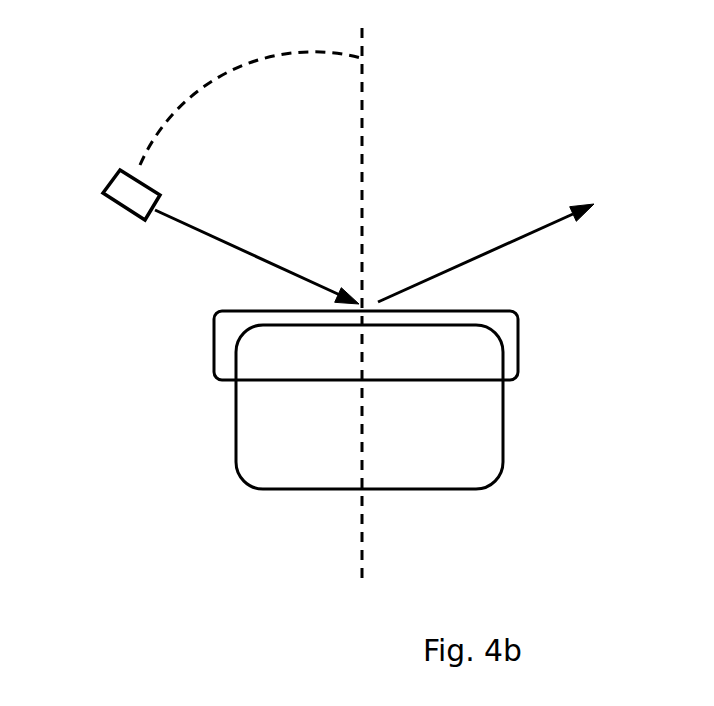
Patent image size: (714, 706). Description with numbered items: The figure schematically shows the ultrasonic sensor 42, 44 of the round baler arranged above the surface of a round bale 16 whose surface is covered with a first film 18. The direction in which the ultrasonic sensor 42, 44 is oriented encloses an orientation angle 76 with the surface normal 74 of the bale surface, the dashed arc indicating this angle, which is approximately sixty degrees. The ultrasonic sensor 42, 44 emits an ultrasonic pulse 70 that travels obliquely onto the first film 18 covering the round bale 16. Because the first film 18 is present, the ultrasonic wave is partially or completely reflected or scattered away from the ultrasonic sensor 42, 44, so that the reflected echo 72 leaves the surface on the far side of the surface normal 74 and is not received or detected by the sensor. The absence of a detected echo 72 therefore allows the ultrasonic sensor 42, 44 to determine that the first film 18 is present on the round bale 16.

The round bale 16 is at (255, 390).
The first film 18 is at (228, 323).
The ultrasonic sensor 42 is at (200, 171).
The ultrasonic sensor 44 is at (127, 192).
The ultrasonic pulse 70 is at (247, 251).
The echo 72 is at (533, 235).
The surface normal 74 is at (362, 157).
The orientation angle 76 is at (165, 119).